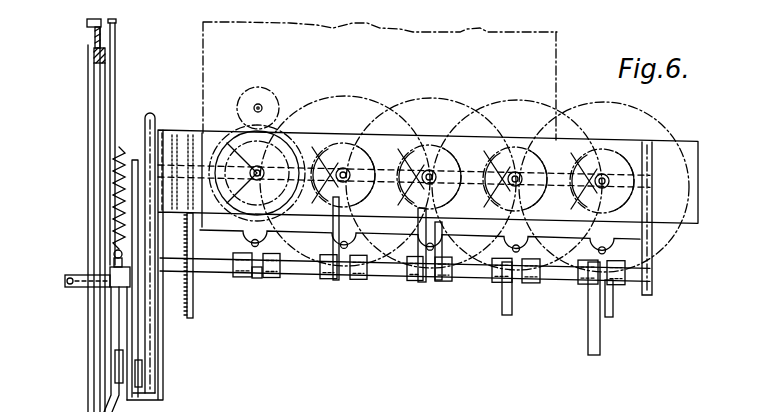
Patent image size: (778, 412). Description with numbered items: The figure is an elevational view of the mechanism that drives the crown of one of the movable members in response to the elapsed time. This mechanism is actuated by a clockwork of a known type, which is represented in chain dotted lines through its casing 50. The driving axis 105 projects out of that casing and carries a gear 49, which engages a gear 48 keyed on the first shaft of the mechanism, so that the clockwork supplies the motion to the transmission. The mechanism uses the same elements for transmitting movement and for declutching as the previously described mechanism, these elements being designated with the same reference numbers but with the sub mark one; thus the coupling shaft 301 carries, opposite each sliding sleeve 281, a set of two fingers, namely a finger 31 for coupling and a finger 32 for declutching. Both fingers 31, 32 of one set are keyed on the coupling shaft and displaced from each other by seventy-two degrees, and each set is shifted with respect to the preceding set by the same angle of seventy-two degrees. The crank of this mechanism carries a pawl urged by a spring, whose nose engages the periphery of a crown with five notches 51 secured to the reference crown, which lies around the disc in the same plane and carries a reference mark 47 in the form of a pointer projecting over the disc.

The reference mark 47 is at (88, 100).
The crown with five notches 51 is at (105, 52).
The driving axis 105 is at (257, 107).
The gear 49 is at (274, 95).
The gear 48 is at (270, 140).
The sliding sleeve 281 is at (322, 142).
The casing 50 is at (543, 70).
The finger for declutching 32 is at (241, 278).
The finger for coupling 31 is at (275, 277).
The coupling shaft 301 is at (307, 275).